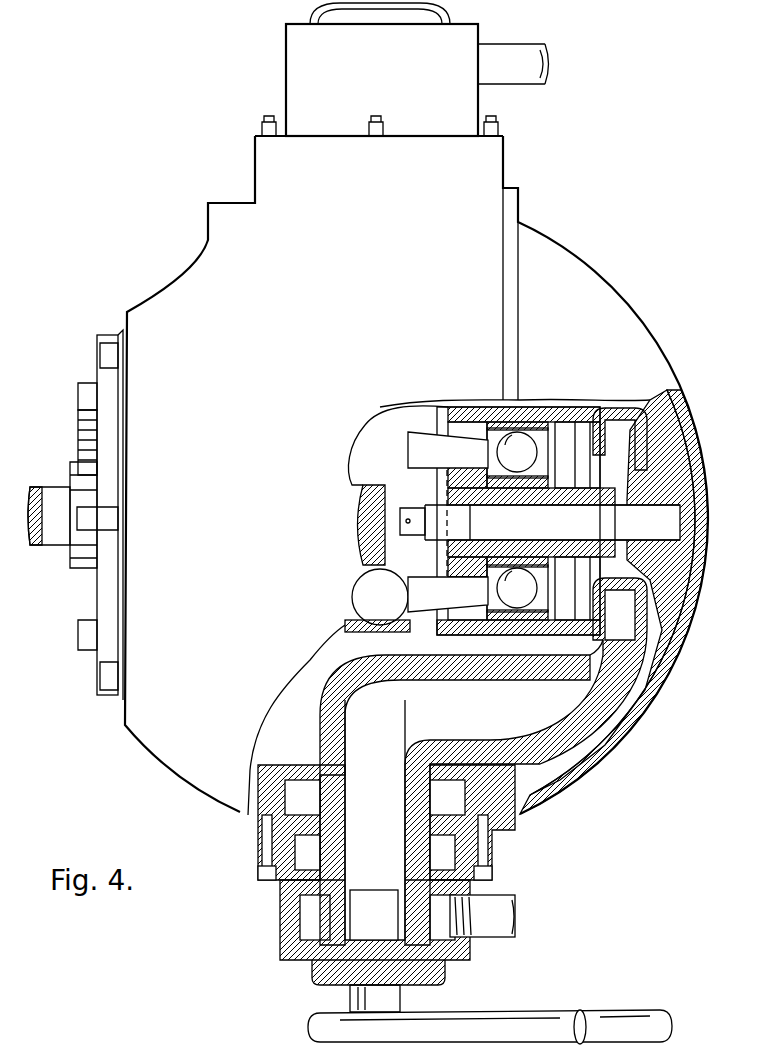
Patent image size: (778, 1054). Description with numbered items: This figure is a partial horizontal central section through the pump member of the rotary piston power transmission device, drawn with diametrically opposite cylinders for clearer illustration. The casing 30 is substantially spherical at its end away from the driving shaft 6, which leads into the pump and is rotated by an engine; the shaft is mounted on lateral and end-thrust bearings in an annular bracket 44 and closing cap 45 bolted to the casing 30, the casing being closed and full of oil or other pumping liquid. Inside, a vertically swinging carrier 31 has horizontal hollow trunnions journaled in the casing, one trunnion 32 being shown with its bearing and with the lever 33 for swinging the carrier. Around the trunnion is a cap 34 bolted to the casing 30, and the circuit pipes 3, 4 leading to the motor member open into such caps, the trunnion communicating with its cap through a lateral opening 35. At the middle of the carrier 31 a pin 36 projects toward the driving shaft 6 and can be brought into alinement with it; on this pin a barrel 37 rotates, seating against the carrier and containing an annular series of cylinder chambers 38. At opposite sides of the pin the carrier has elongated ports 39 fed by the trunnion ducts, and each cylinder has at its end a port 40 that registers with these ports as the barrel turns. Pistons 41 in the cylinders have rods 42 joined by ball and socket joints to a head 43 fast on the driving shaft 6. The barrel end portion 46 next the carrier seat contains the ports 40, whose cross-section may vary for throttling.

The pipe 3 is at (500, 910).
The pipe 4 is at (548, 66).
The driving shaft 6 is at (48, 540).
The casing 30 is at (655, 735).
The carrier 31 is at (665, 625).
The trunnion 32 is at (370, 832).
The lever 33 is at (545, 1012).
The cap 34 is at (257, 912).
The lateral opening 35 is at (374, 915).
The pin 36 is at (540, 515).
The barrel 37 is at (497, 635).
The cylinder chamber 38 is at (473, 432).
The port 39 is at (620, 475).
The port 40 is at (597, 460).
The piston 41 is at (547, 410).
The rod 42 is at (420, 445).
The head 43 is at (352, 638).
The annular bracket 44 is at (122, 340).
The closing cap 45 is at (95, 430).
The end portion 46 is at (590, 632).